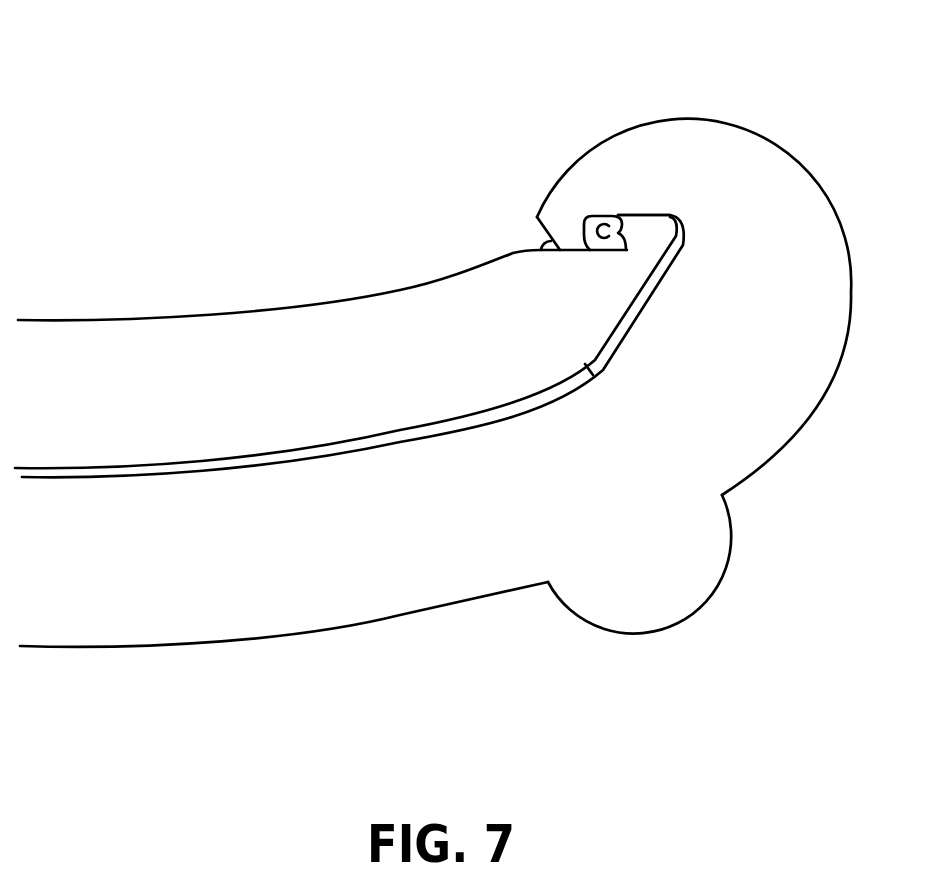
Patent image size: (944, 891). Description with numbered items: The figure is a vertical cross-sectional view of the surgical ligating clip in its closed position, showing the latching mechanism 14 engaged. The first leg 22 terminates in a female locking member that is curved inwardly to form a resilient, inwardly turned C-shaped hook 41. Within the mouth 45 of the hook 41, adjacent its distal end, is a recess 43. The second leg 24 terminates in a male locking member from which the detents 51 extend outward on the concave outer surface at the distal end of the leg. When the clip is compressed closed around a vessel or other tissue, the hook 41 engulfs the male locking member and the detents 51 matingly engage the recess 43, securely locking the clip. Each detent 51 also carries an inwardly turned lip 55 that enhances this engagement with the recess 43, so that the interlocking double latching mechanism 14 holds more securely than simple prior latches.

The latching mechanism 14 is at (455, 171).
The first leg 22 is at (395, 528).
The second leg 24 is at (378, 385).
The hook 41 is at (780, 142).
The recess 43 is at (633, 217).
The mouth 45 is at (652, 320).
The detents 51 is at (668, 252).
The inwardly turned lip 55 is at (610, 216).